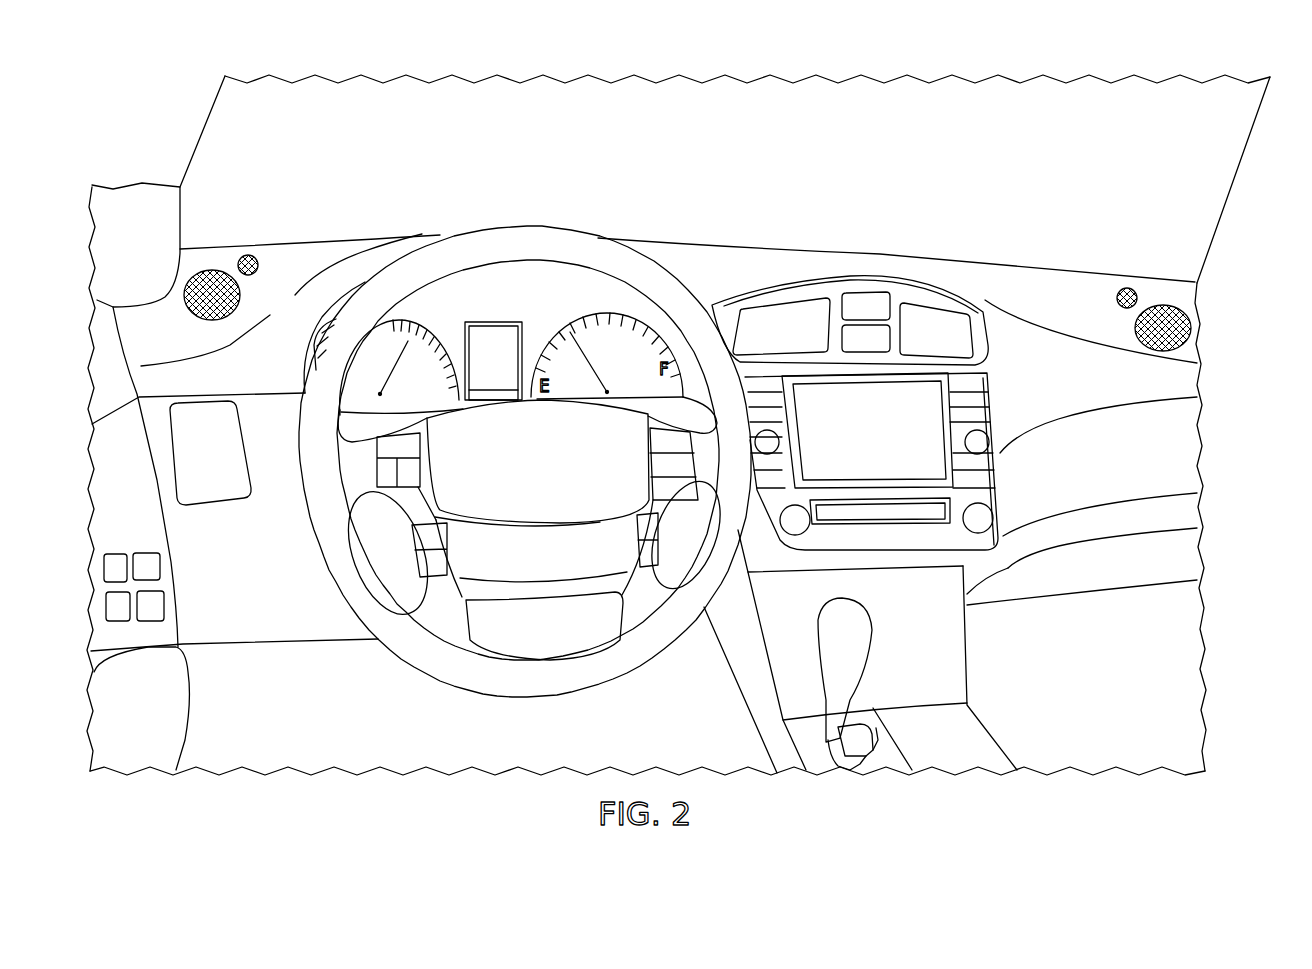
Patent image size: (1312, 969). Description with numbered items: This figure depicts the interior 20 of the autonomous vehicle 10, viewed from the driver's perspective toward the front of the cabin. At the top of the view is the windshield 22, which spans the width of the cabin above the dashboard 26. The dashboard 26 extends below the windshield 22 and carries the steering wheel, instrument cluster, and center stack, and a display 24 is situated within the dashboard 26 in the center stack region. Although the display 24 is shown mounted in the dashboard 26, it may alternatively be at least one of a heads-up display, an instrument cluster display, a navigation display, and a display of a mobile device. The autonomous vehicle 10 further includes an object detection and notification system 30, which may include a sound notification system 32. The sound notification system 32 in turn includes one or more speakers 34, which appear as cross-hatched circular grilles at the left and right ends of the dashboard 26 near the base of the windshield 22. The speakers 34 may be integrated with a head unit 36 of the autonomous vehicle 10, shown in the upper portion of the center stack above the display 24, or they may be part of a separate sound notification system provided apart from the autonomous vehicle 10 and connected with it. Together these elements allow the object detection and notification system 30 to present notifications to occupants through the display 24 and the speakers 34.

The autonomous vehicle 10 is at (992, 114).
The interior 20 is at (329, 156).
The windshield 22 is at (198, 142).
The display 24 is at (935, 412).
The dashboard 26 is at (1073, 287).
The object detection and notification system 30 is at (1200, 186).
The sound notification system 32 is at (800, 304).
The speakers 34 is at (1212, 287).
The head unit 36 is at (948, 326).